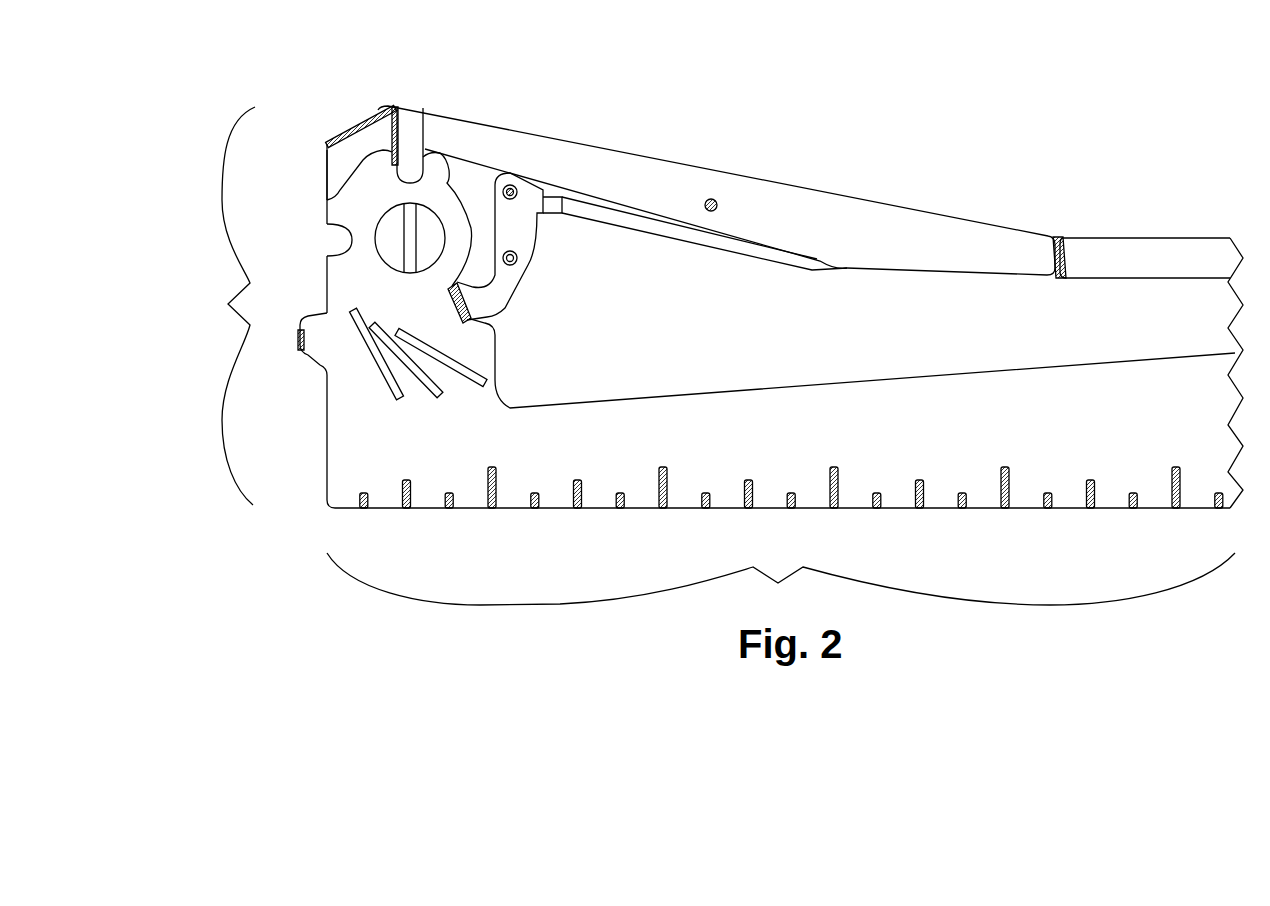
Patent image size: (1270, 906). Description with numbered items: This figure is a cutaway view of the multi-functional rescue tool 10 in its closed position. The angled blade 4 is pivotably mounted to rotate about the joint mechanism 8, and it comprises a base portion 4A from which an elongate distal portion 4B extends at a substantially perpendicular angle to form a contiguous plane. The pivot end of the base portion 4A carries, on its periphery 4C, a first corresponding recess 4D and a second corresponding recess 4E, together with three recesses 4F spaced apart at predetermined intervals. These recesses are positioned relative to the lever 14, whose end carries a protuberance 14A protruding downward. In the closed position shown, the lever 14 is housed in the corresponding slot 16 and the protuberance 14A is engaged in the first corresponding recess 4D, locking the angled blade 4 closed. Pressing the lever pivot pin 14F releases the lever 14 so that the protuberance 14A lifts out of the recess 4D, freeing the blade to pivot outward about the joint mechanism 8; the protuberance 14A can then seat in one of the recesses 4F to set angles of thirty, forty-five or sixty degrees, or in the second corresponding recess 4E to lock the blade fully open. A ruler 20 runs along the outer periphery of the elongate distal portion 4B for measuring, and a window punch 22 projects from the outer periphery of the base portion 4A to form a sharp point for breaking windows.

The multi-functional rescue tool 10 is at (996, 126).
The angled blade 4 is at (345, 484).
The base portion 4A is at (227, 306).
The elongate distal portion 4B is at (781, 580).
The periphery 4C is at (328, 150).
The first corresponding recess 4D is at (413, 180).
The second corresponding recess 4E is at (340, 240).
The recesses 4F is at (355, 178).
The joint mechanism 8 is at (400, 240).
The lever 14 is at (843, 217).
The protuberance 14A is at (410, 165).
The lever pivot pin 14F is at (711, 198).
The corresponding slot 16 is at (530, 195).
The ruler 20 is at (547, 497).
The window punch 22 is at (300, 332).